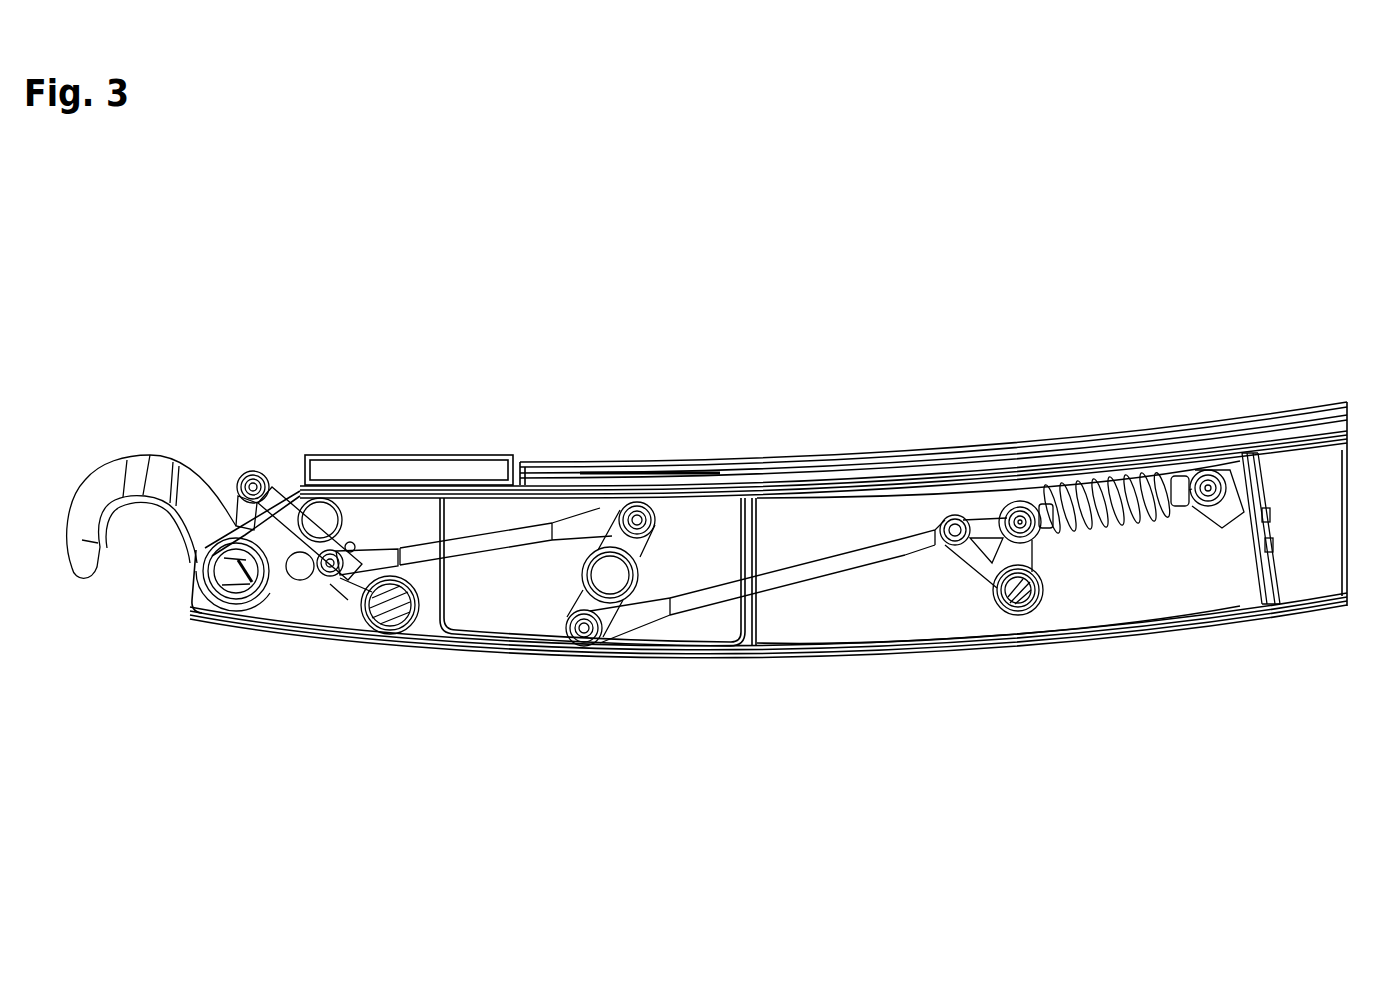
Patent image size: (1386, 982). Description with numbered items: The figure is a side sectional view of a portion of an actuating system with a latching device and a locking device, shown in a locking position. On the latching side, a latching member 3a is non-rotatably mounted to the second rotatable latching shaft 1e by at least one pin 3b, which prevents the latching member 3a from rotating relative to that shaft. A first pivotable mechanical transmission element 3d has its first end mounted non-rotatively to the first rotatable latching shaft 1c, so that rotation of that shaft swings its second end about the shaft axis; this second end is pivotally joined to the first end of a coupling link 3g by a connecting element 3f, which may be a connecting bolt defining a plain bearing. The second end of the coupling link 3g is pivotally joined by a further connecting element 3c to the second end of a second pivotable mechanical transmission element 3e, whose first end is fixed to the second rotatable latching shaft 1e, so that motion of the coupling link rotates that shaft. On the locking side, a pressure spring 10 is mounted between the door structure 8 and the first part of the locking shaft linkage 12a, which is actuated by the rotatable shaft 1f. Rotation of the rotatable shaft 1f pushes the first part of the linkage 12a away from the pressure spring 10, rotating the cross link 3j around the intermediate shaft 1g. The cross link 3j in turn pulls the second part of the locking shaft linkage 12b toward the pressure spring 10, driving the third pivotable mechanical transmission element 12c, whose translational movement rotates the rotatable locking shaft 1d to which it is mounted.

The latching member 3a is at (88, 507).
The second pivotable mechanical transmission element 3e is at (253, 523).
The connecting element 3c is at (253, 487).
The coupling link 3g is at (280, 513).
The rotatable locking shaft 1d is at (323, 520).
The third pivotable mechanical transmission element 12c is at (350, 547).
The second rotatable latching shaft 1e is at (220, 588).
The pin 3b is at (240, 573).
The connecting element 3f is at (330, 563).
The first pivotable mechanical transmission element 3d is at (348, 588).
The first rotatable latching shaft 1c is at (390, 610).
The second part of the locking shaft linkage 12b is at (527, 538).
The cross link 3j is at (620, 540).
The intermediate shaft 1g is at (612, 573).
The first part of the locking shaft linkage 12a is at (830, 562).
The rotatable shaft 1f is at (1017, 603).
The pressure spring 10 is at (1096, 480).
The door structure 8 is at (1260, 560).